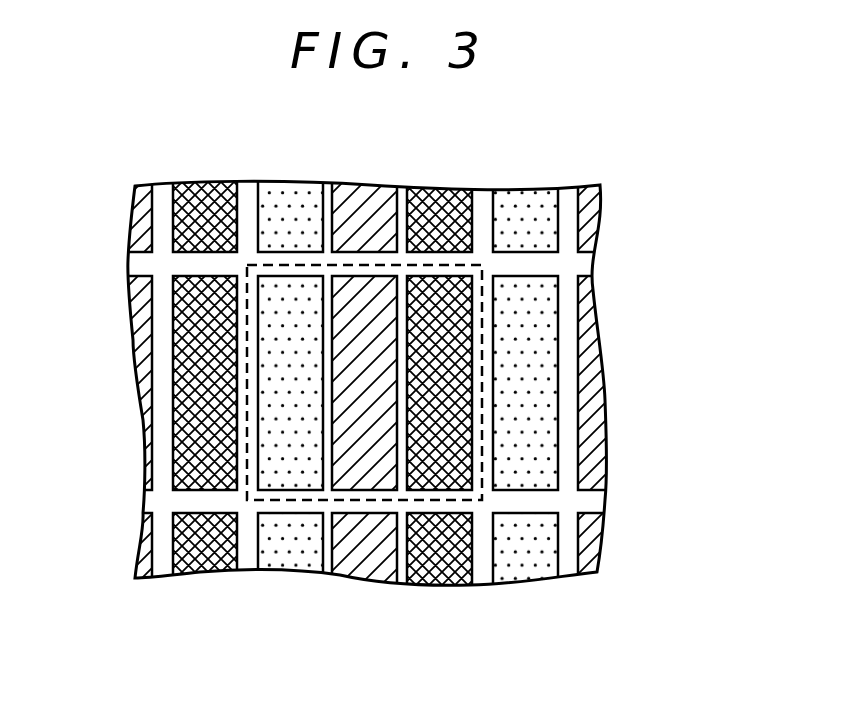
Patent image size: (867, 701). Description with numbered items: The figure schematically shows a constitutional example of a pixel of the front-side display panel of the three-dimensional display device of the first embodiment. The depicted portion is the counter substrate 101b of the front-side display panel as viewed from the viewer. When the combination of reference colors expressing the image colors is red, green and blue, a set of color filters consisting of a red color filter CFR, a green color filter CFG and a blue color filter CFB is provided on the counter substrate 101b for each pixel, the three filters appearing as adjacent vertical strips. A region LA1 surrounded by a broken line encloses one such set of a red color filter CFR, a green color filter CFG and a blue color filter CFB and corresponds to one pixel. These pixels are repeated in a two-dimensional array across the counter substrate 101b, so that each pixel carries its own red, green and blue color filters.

The counter substrate 101b is at (600, 232).
The red color filter CFR is at (287, 207).
The green color filter CFG is at (358, 207).
The blue color filter CFB is at (435, 205).
The region corresponding to one pixel LA1 is at (476, 262).